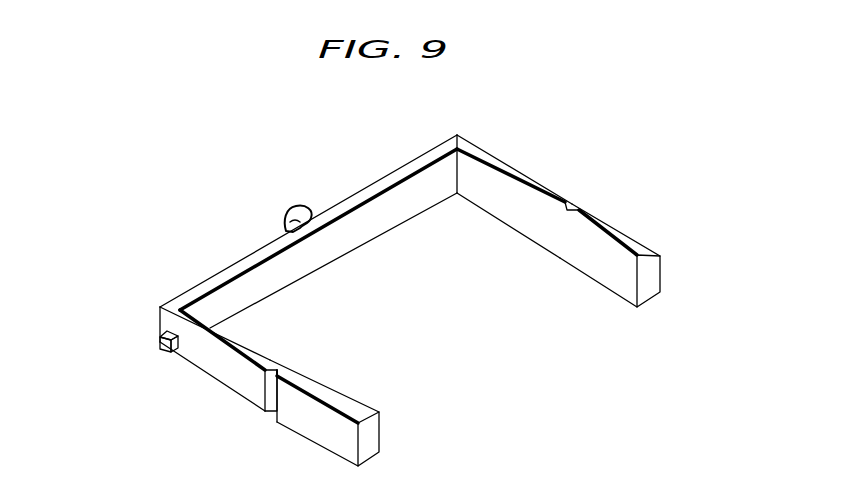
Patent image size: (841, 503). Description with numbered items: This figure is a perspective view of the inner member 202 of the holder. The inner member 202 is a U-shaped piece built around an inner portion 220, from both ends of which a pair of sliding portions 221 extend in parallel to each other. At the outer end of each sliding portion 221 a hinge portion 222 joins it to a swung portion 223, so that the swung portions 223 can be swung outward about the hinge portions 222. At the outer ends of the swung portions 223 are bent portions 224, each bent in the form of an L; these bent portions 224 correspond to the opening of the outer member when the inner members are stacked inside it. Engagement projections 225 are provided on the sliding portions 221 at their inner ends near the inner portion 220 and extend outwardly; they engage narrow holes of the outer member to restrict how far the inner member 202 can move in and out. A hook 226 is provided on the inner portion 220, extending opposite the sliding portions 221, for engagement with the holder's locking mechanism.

The inner member 202 is at (548, 125).
The inner portion 220 is at (342, 245).
The sliding portions 221 is at (542, 188).
The hinge portions 222 is at (579, 205).
The swung portions 223 is at (630, 240).
The bent portions 224 is at (650, 290).
The engagement projections 225 is at (163, 350).
The hook 226 is at (290, 205).